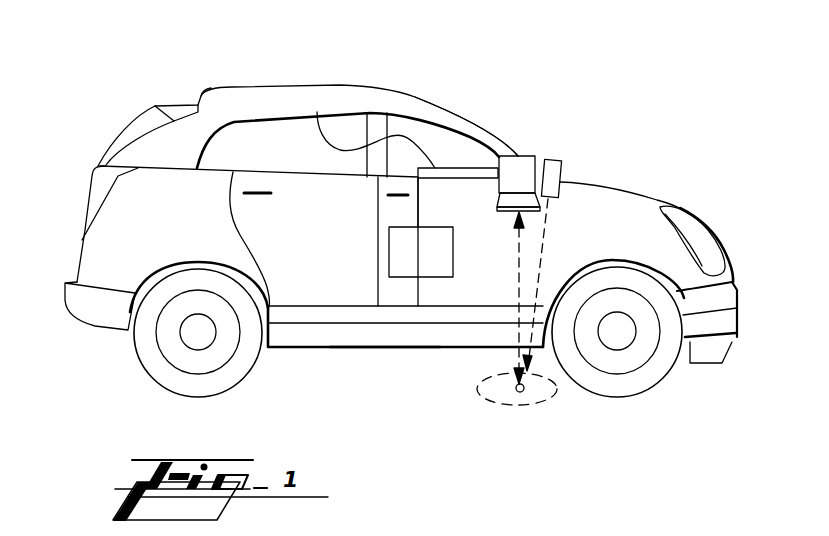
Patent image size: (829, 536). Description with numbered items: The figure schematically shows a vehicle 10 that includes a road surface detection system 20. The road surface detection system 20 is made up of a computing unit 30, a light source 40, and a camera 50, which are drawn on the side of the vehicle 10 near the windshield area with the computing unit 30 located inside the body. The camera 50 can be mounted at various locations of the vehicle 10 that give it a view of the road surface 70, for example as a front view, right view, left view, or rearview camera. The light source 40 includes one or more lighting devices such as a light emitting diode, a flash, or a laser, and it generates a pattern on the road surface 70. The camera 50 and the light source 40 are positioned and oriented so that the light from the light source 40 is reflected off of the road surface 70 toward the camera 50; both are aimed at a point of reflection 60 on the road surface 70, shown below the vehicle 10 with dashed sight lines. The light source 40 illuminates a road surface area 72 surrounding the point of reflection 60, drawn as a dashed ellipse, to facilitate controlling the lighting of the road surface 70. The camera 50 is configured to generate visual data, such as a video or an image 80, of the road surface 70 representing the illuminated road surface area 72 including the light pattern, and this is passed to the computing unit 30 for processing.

The vehicle 10 is at (73, 139).
The road surface detection system 20 is at (503, 135).
The computing unit 30 is at (438, 264).
The light source 40 is at (561, 174).
The camera 50 is at (522, 155).
The point of reflection 60 is at (520, 392).
The road surface 70 is at (402, 406).
The road surface area 72 is at (533, 405).
The image 80 is at (317, 112).